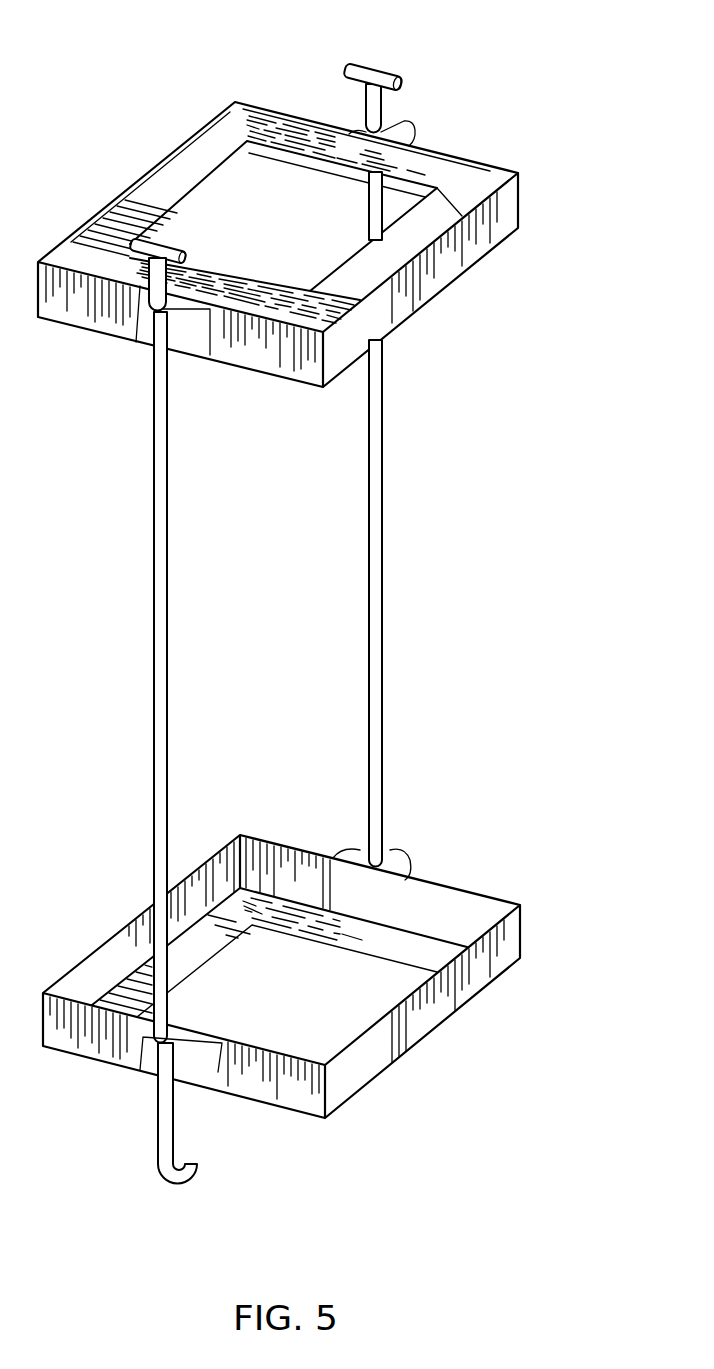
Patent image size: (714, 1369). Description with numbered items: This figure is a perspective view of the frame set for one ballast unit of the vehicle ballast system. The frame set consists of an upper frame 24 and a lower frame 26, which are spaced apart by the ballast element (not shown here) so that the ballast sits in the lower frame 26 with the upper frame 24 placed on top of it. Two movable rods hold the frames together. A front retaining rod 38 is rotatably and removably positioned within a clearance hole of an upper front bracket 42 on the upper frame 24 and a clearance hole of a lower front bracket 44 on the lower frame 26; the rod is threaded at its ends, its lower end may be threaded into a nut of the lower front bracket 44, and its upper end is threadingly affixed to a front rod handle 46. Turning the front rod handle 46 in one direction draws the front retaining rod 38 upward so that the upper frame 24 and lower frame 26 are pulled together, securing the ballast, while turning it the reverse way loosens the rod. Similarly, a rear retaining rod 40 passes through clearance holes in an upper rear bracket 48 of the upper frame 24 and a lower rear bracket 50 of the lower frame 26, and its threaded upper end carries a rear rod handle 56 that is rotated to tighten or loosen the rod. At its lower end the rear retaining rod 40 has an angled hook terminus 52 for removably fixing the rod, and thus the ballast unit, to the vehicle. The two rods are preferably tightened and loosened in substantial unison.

The upper frame 24 is at (528, 203).
The lower frame 26 is at (525, 950).
The front retaining rod 38 is at (383, 584).
The rear retaining rod 40 is at (153, 512).
The upper front bracket 42 is at (408, 128).
The lower front bracket 44 is at (405, 873).
The front rod handle 46 is at (346, 64).
The upper rear bracket 48 is at (138, 292).
The lower rear bracket 50 is at (140, 1046).
The hook terminus 52 is at (157, 1168).
The rear rod handle 56 is at (180, 244).